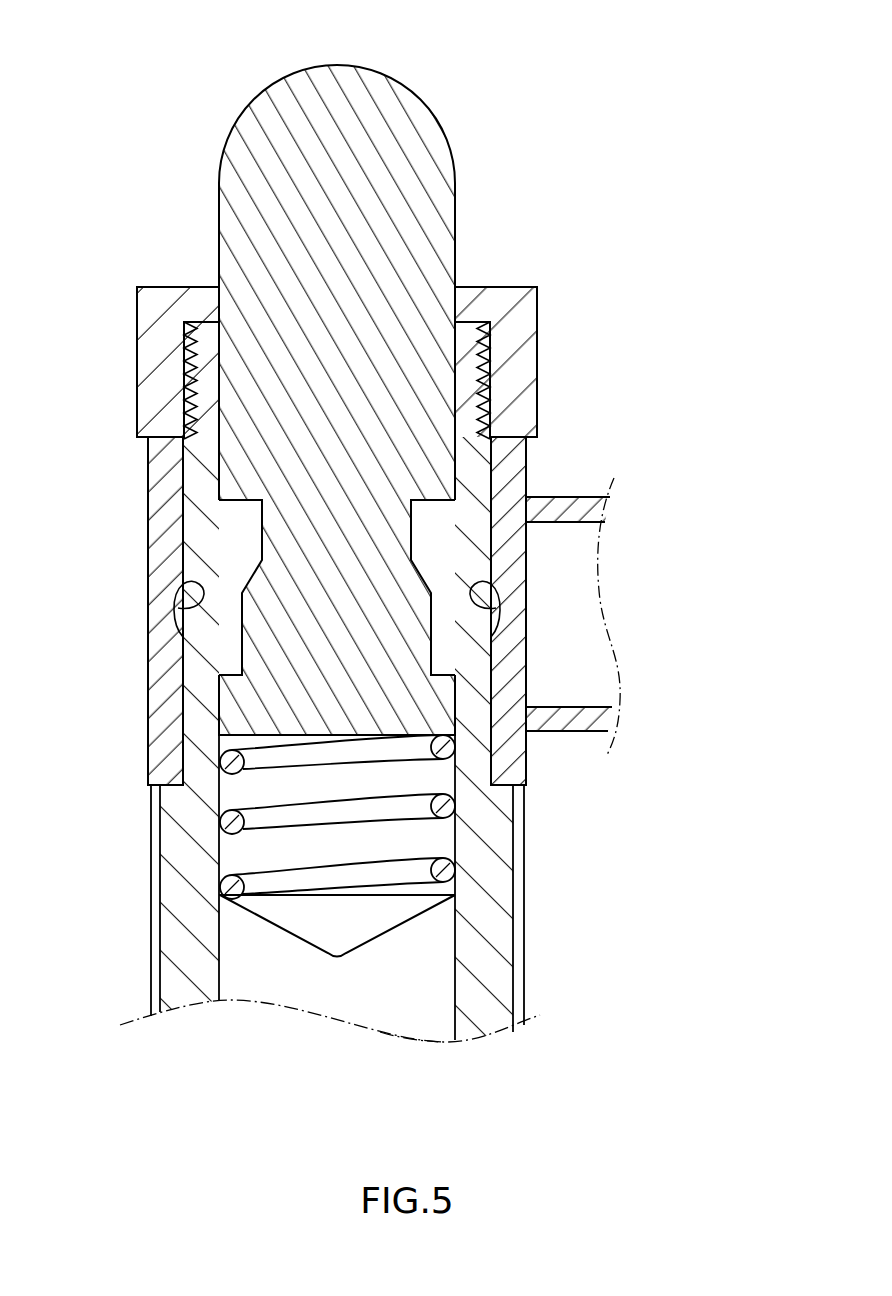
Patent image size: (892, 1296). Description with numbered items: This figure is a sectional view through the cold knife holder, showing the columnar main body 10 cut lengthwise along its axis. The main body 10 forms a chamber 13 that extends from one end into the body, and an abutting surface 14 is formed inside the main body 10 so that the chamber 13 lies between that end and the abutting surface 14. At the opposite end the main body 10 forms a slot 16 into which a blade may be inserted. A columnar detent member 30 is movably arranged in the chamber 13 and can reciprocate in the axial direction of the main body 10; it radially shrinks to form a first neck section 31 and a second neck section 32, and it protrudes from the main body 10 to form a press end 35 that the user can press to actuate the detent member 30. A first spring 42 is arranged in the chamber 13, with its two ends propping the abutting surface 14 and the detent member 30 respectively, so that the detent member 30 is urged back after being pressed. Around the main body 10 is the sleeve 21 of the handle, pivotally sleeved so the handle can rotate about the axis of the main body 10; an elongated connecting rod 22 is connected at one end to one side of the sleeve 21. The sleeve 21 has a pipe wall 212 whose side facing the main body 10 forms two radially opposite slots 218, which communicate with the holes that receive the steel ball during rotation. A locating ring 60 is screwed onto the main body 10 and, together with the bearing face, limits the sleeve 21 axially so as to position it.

The main body 10 is at (152, 905).
The chamber 13 is at (440, 643).
The abutting surface 14 is at (273, 923).
The slot 16 is at (410, 1015).
The sleeve 21 is at (148, 705).
The connecting rod 22 is at (568, 732).
The pipe wall 212 is at (478, 508).
The slots 218 is at (205, 592).
The detent member 30 is at (460, 202).
The first neck section 31 is at (242, 636).
The second neck section 32 is at (262, 530).
The press end 35 is at (337, 64).
The first spring 42 is at (440, 870).
The locating ring 60 is at (537, 345).